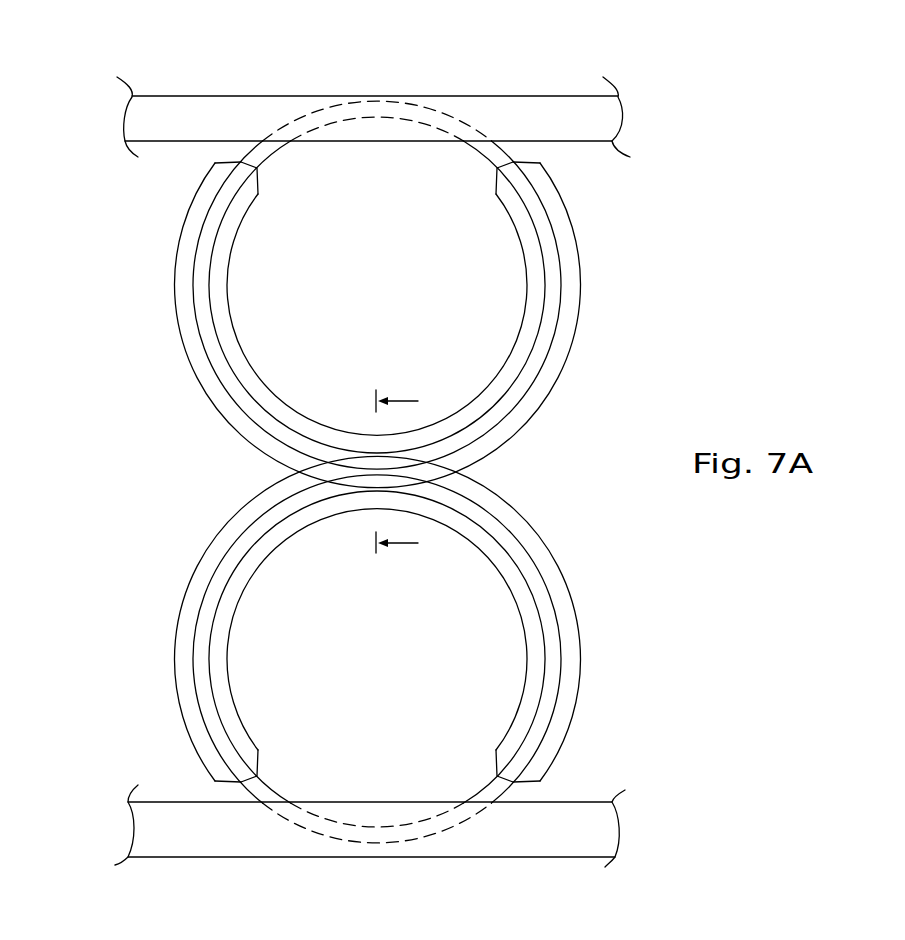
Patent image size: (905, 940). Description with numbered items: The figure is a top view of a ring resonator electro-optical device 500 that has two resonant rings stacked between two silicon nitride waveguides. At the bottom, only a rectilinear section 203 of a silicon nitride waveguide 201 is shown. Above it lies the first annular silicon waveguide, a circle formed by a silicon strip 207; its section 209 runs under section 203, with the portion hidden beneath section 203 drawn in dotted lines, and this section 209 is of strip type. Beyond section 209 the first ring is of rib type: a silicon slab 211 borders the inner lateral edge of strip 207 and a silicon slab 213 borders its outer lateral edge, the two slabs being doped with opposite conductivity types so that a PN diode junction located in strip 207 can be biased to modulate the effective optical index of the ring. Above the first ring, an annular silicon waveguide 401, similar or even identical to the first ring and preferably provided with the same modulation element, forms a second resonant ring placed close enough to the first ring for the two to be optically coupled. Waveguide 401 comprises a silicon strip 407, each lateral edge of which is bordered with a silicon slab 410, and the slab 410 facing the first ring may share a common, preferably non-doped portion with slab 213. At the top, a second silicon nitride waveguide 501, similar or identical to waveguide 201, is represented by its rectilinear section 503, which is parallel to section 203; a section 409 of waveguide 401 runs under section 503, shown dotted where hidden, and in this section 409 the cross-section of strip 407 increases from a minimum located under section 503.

The ring resonator electro-optical device 500 is at (176, 56).
The silicon nitride waveguide 501 is at (114, 117).
The section of silicon nitride waveguide 503 is at (373, 117).
The section of annular silicon waveguide 409 is at (466, 122).
The annular silicon waveguide 401 is at (578, 219).
The silicon strip 407 is at (551, 269).
The silicon slab 410 is at (518, 347).
The silicon slab 213 is at (555, 585).
The silicon slab 211 is at (535, 648).
The silicon strip 207 is at (552, 675).
The silicon nitride waveguide 201 is at (110, 823).
The section of silicon nitride waveguide 203 is at (202, 833).
The section of annular silicon waveguide 209 is at (463, 818).